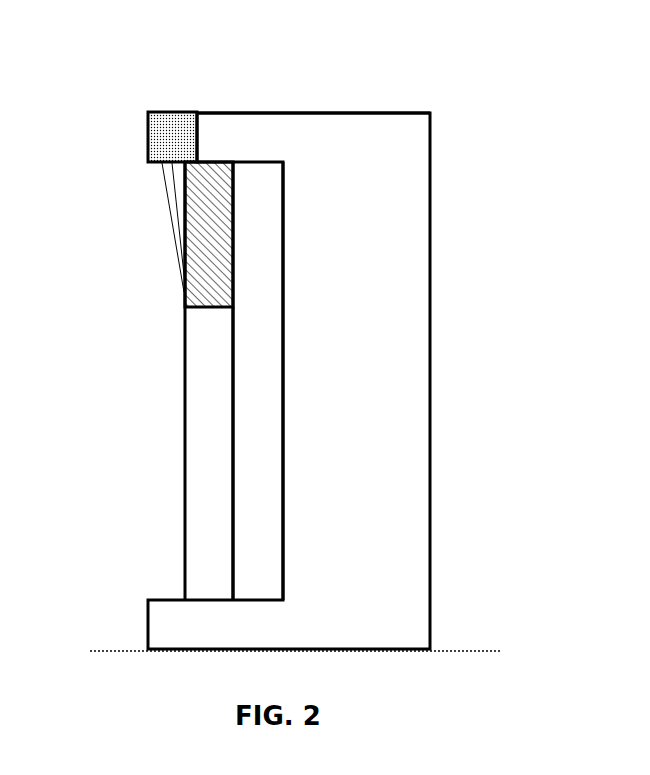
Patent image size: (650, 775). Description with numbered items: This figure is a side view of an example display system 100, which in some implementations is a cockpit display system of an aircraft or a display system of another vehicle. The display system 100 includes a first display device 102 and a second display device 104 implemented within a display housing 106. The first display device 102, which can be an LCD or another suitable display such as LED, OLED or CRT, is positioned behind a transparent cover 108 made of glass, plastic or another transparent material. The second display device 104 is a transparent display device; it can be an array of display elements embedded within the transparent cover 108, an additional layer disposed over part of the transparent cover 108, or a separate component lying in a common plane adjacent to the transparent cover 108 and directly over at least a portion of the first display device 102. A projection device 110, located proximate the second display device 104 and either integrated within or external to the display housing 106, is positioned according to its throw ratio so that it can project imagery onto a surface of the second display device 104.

The display system 100 is at (488, 56).
The first display device 102 is at (252, 353).
The second display device 104 is at (203, 213).
The display housing 106 is at (368, 279).
The transparent cover 108 is at (215, 458).
The projection device 110 is at (166, 135).